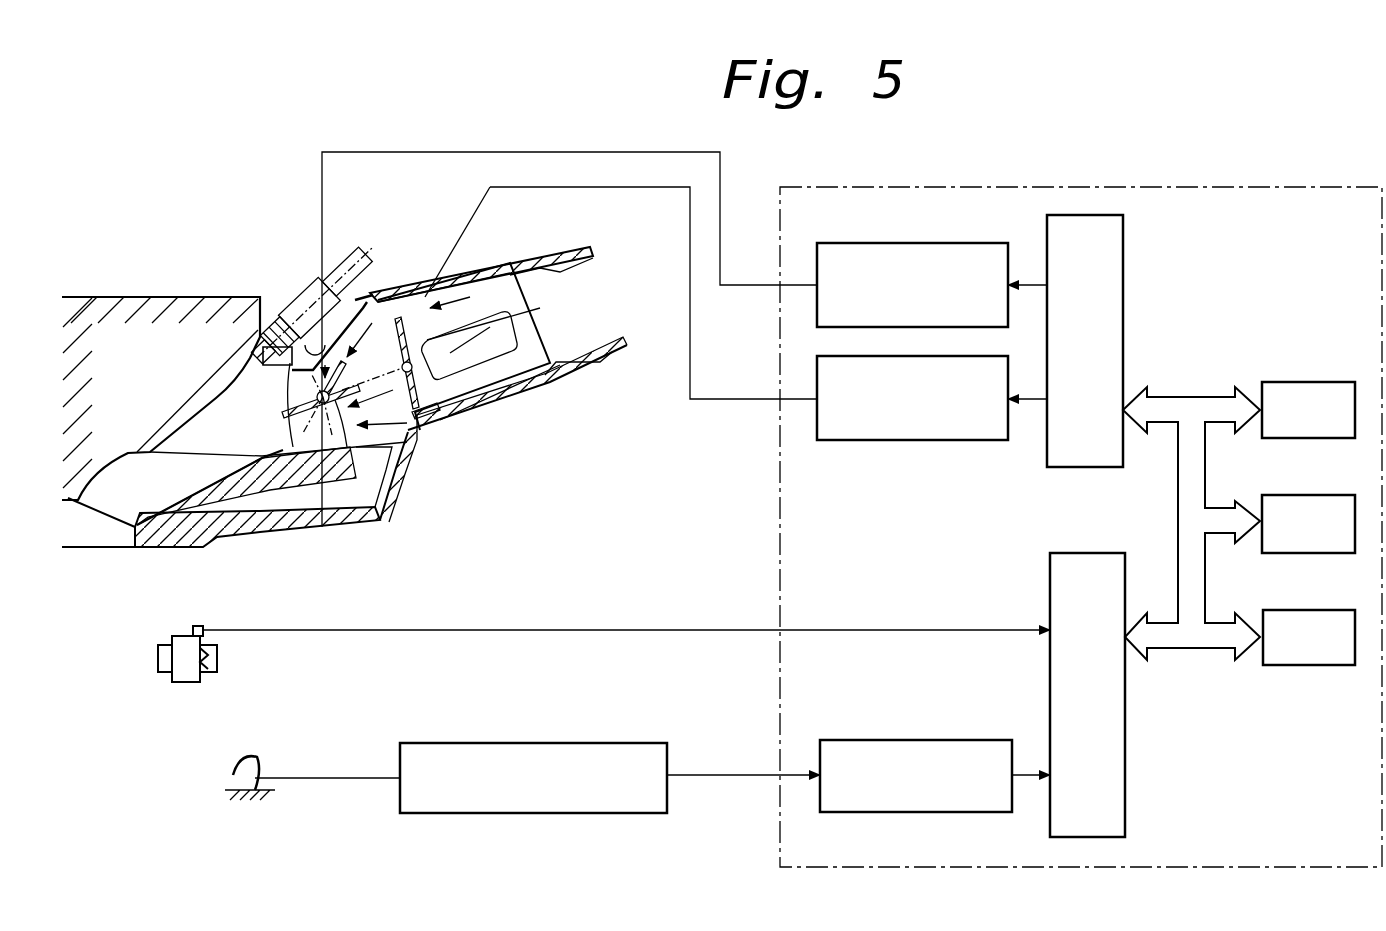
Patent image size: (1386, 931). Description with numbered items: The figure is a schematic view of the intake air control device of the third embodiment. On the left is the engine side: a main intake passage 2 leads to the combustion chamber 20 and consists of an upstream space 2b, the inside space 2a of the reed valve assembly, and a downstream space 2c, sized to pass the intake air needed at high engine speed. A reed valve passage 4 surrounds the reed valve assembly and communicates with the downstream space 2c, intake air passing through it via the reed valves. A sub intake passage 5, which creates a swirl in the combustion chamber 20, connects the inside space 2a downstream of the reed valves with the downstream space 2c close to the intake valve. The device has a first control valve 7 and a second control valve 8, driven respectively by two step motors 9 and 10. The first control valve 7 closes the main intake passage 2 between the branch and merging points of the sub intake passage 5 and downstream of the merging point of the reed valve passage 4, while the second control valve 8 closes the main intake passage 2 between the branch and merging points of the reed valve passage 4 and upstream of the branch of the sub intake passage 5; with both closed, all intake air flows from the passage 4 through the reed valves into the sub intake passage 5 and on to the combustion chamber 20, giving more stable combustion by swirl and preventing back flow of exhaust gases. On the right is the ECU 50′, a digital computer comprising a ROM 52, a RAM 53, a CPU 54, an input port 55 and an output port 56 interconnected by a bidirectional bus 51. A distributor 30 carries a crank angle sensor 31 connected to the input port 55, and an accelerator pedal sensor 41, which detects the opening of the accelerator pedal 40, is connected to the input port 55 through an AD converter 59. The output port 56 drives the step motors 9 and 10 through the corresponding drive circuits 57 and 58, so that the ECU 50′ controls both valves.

The main intake passage 2 is at (215, 390).
The downstream space 2c is at (160, 398).
The combustion chamber 20 is at (92, 535).
The sub intake passage 5 is at (322, 503).
The step motor 9 is at (392, 500).
The inside space 2a is at (513, 372).
The upstream space 2b is at (575, 280).
The reed valve passage 4 is at (375, 290).
The second control valve 8 is at (400, 300).
The step motor 10 is at (422, 387).
The first control valve 7 is at (300, 335).
The distributor 30 is at (195, 690).
The crank angle sensor 31 is at (205, 625).
The accelerator pedal 40 is at (262, 775).
The accelerator pedal sensor 41 is at (540, 742).
The ECU 50′ is at (1130, 185).
The drive circuit 57 is at (903, 243).
The drive circuit 58 is at (890, 442).
The output port 56 is at (1125, 257).
The input port 55 is at (1127, 790).
The AD converter 59 is at (903, 740).
The bidirectional bus 51 is at (1183, 397).
The ROM 52 is at (1305, 382).
The RAM 53 is at (1303, 495).
The CPU 54 is at (1305, 610).